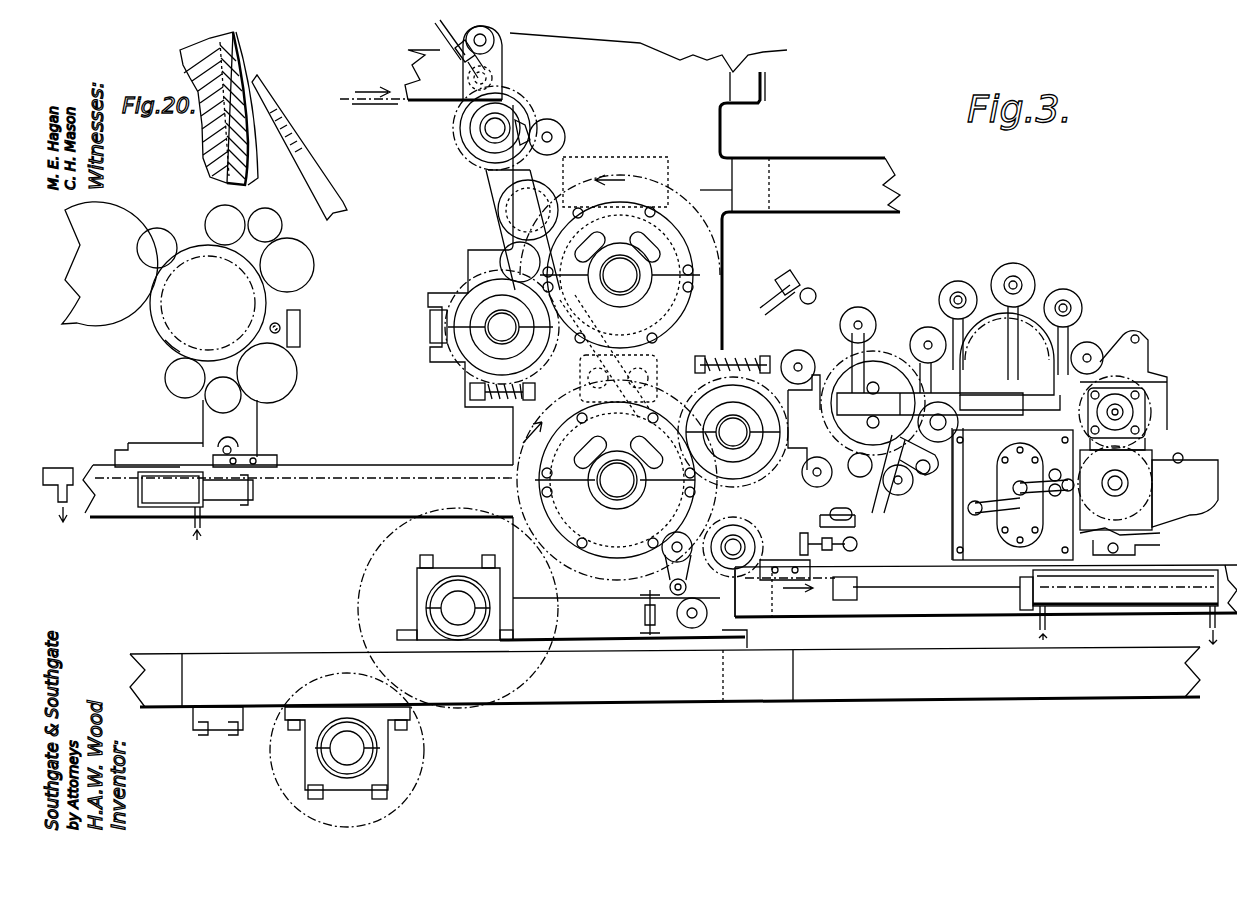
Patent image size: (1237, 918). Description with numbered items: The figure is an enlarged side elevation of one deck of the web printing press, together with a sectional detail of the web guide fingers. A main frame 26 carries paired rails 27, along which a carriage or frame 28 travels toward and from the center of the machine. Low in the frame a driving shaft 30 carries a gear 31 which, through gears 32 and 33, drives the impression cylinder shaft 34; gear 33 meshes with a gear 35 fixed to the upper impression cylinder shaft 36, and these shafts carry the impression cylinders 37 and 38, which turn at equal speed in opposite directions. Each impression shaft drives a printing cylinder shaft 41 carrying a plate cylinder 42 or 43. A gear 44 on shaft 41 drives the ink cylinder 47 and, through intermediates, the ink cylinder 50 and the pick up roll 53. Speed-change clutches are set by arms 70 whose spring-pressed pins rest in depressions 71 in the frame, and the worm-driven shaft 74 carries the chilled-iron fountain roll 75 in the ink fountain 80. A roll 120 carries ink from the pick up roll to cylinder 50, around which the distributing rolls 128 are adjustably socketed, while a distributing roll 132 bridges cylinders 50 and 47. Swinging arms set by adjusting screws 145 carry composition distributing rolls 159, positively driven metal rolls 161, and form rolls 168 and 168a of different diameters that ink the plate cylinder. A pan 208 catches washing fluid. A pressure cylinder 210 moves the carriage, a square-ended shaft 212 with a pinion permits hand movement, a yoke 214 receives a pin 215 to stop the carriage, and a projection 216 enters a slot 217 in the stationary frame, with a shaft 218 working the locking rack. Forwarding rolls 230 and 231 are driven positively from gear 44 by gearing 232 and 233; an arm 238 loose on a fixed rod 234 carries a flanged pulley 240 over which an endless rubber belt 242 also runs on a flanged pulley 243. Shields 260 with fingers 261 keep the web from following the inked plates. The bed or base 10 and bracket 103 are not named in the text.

In FIG. 3, the bed 10 is at (850, 620).
In FIG. 3, the main frame 26 is at (648, 48).
In FIG. 3, the rail 27 is at (405, 68).
In FIG. 3, the carriage or frame 28 is at (257, 425).
In FIG. 3, the driving shaft 30 is at (360, 757).
In FIG. 3, the gear 31 is at (430, 748).
In FIG. 3, the gear 32 is at (530, 678).
In FIG. 3, the gear 33 is at (605, 590).
In FIG. 3, the impression cylinder shaft 34 is at (618, 500).
In FIG. 3, the gear 35 is at (660, 178).
In FIG. 3, the impression cylinder shaft 36 is at (626, 285).
In FIG. 3, the impression cylinder 37 is at (560, 555).
In FIG. 3, the impression cylinder 38 is at (700, 255).
In FIG. 3, the printing cylinder shaft 41 is at (614, 378).
In FIG. 3, the printing plate cylinder 42 is at (658, 375).
In FIG. 20, the printing plate cylinder 43 is at (203, 138).
In FIG. 3, the printing plate cylinder 43 is at (428, 300).
In FIG. 3, the gear 44 is at (462, 300).
In FIG. 3, the ink cylinder 47 is at (160, 342).
In FIG. 3, the ink cylinder 50 is at (70, 318).
In FIG. 3, the pick up roll 53 is at (1150, 410).
In FIG. 3, the arm 70 is at (1013, 495).
In FIG. 3, the depression 71 is at (1005, 490).
In FIG. 3, the shaft 74 is at (1117, 488).
In FIG. 3, the fountain roll 75 is at (1060, 500).
In FIG. 3, the ink fountain 80 is at (1185, 490).
In FIG. 3, the bracket 103 is at (1142, 357).
In FIG. 3, the roll 120 is at (1092, 343).
In FIG. 3, the distributing roll 128 is at (965, 275).
In FIG. 3, the distributing roll 132 is at (150, 230).
In FIG. 3, the adjusting screw 145 is at (785, 300).
In FIG. 3, the composition distributing roll 159 is at (215, 212).
In FIG. 3, the metal roll 161 is at (270, 226).
In FIG. 3, the form roll 168 is at (300, 265).
In FIG. 3, the form roll 168a is at (297, 385).
In FIG. 3, the pan 208 is at (60, 475).
In FIG. 3, the pressure cylinder 210 is at (170, 490).
In FIG. 3, the shaft 212 is at (235, 450).
In FIG. 3, the yoke 214 is at (1160, 533).
In FIG. 3, the pin 215 is at (1140, 548).
In FIG. 3, the projection 216 is at (300, 333).
In FIG. 3, the slot 217 is at (430, 330).
In FIG. 3, the shaft 218 is at (262, 330).
In FIG. 3, the paper forwarding roll 230 is at (760, 585).
In FIG. 3, the forwarding roll 231 is at (480, 138).
In FIG. 3, the gearing 232 is at (812, 531).
In FIG. 3, the gearing 233 is at (500, 245).
In FIG. 3, the fixed rod 234 is at (495, 35).
In FIG. 3, the lever or arm 238 is at (495, 65).
In FIG. 3, the flanged pulley 240 is at (505, 82).
In FIG. 3, the endless rubber belt 242 is at (530, 110).
In FIG. 3, the flanged pulley 243 is at (566, 135).
In FIG. 20, the shield 260 is at (340, 212).
In FIG. 3, the shield 260 is at (620, 378).
In FIG. 20, the finger 261 is at (262, 92).